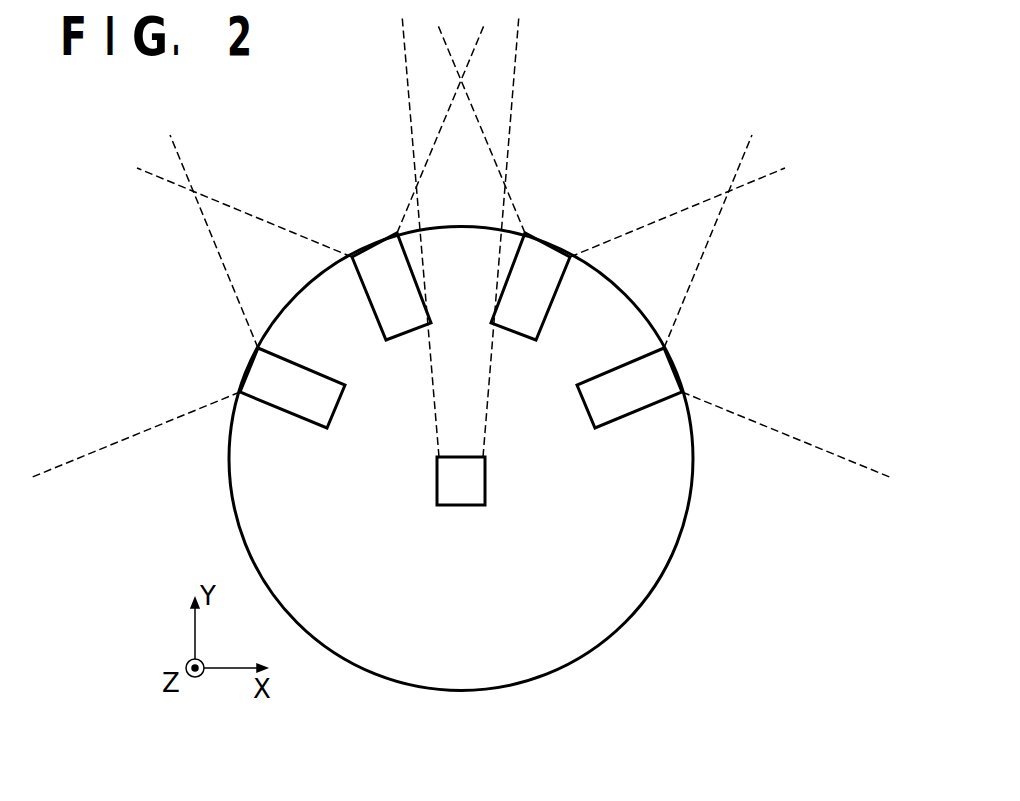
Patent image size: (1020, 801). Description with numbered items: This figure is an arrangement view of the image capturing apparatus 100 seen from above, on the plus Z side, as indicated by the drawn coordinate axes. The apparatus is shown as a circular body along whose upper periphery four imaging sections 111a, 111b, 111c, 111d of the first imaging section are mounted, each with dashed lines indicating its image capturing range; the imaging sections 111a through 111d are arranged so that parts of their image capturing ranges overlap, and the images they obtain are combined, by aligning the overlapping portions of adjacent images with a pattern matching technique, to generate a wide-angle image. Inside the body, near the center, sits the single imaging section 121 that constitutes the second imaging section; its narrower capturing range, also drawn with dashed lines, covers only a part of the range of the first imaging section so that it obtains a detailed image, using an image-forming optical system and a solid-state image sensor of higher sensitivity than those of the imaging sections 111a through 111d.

The image capturing apparatus 100 is at (719, 498).
The imaging section 111a is at (283, 407).
The imaging section 111b is at (377, 327).
The imaging section 111c is at (545, 328).
The imaging section 111d is at (638, 415).
The imaging section 121 is at (461, 505).